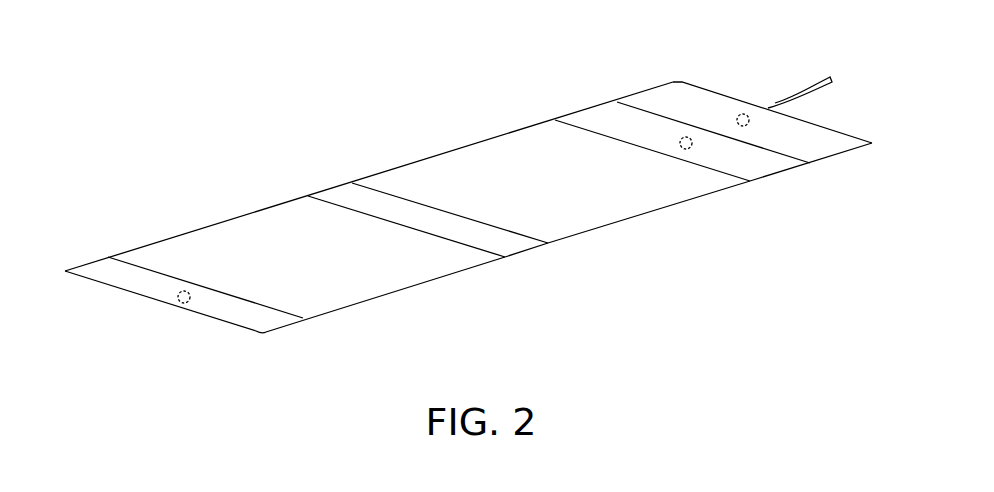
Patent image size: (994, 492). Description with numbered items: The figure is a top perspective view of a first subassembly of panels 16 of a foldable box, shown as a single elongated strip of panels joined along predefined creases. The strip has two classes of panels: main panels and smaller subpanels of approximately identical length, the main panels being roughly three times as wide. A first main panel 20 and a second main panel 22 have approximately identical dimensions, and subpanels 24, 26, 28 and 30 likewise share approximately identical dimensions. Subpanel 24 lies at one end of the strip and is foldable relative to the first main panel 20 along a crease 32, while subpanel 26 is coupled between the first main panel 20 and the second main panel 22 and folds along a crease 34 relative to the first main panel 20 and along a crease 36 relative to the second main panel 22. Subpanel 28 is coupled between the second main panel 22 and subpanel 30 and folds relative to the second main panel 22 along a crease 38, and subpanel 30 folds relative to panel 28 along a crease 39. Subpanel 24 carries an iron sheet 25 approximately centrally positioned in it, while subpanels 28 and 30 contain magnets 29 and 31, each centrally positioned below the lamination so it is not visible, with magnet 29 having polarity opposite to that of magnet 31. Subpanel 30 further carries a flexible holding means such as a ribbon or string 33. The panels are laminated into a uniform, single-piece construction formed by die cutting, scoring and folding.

The first subassembly of panels 16 is at (323, 120).
The first main panel 20 is at (392, 294).
The second main panel 22 is at (648, 213).
The subpanel 24 is at (277, 330).
The iron sheet 25 is at (178, 302).
The subpanel 26 is at (520, 242).
The subpanel 28 is at (785, 172).
The magnet 29 is at (688, 138).
The subpanel 30 is at (647, 88).
The magnet 31 is at (747, 114).
The crease 32 is at (160, 272).
The ribbon or string 33 is at (815, 78).
The crease 34 is at (365, 215).
The crease 36 is at (402, 195).
The crease 38 is at (590, 132).
The crease 39 is at (712, 130).